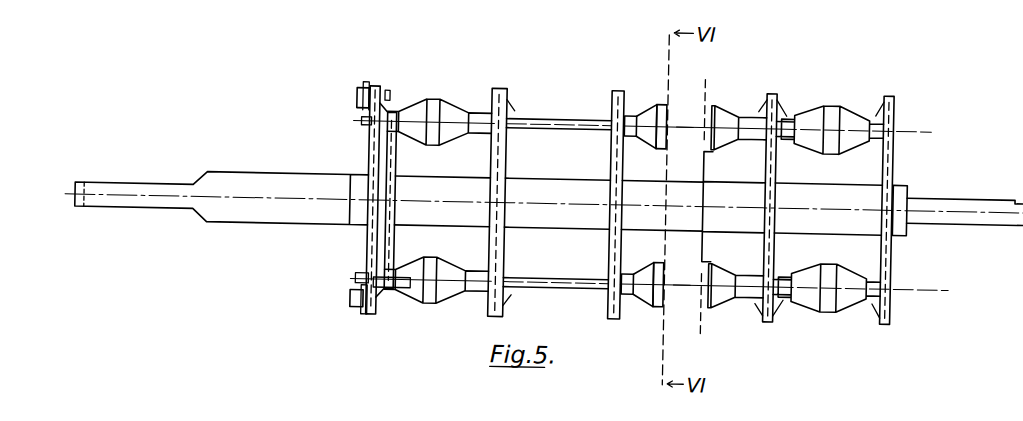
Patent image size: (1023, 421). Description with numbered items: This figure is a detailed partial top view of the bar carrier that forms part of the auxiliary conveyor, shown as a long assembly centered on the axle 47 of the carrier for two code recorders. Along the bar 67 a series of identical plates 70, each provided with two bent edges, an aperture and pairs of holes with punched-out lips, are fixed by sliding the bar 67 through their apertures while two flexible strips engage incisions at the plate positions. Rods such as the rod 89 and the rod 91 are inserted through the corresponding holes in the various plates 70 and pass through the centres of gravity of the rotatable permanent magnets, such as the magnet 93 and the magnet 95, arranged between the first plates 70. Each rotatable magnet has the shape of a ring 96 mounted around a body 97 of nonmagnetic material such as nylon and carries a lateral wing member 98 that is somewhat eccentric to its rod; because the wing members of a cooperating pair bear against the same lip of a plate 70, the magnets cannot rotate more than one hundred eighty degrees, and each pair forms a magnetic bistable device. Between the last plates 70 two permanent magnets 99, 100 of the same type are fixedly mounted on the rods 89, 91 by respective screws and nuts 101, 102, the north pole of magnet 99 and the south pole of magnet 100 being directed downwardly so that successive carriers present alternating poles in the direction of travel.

The axle 47 is at (965, 194).
The bar 67 is at (910, 199).
The plate 70 is at (895, 197).
The rod 89 is at (559, 143).
The rod 91 is at (556, 296).
The rotatable permanent magnet 93 is at (660, 119).
The rotatable permanent magnet 95 is at (654, 296).
The ring 96 is at (678, 108).
The body 97 is at (653, 107).
The lateral wing member 98 is at (634, 101).
The fixed permanent magnet 99 is at (424, 136).
The fixed permanent magnet 100 is at (420, 294).
The screw and nut 101 is at (350, 103).
The screw and nut 102 is at (334, 293).